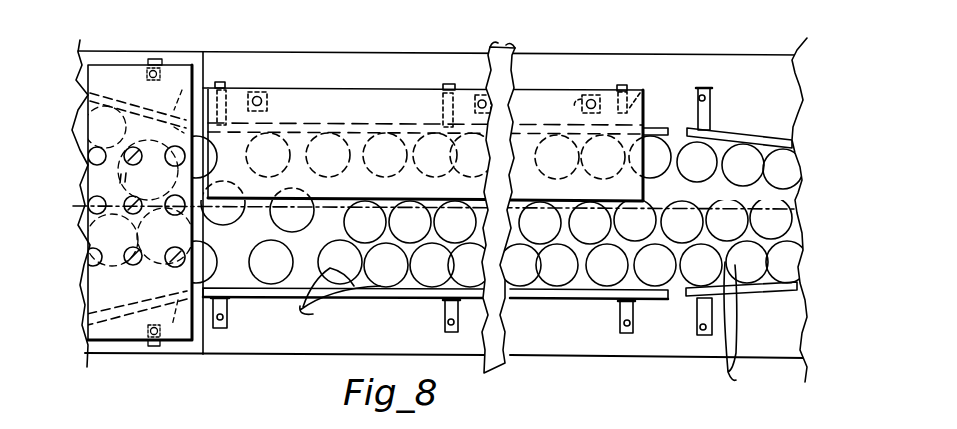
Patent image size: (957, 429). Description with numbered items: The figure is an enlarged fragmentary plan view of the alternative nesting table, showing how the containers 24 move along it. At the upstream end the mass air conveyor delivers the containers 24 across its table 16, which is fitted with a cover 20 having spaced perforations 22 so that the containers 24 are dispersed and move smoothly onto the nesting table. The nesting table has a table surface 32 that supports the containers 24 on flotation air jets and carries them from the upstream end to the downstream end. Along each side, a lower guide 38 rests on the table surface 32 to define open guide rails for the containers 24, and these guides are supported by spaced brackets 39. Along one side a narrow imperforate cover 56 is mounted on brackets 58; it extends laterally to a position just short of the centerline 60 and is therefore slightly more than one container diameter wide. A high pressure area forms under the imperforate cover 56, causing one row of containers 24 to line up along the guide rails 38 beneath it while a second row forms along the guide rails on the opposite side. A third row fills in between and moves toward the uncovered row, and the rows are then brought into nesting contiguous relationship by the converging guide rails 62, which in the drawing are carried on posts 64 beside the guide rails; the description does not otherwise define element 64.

The table 16 is at (132, 356).
The cover 20 is at (123, 72).
The perforations 22 is at (134, 206).
The containers 24 is at (83, 330).
The table surface 32 is at (340, 353).
The lower guide 38 is at (358, 123).
The brackets 39 is at (220, 82).
The imperforate cover 56 is at (300, 88).
The brackets 58 is at (258, 92).
The centerline 60 is at (694, 170).
The converging guide rails 62 is at (768, 137).
The post 64 is at (698, 84).